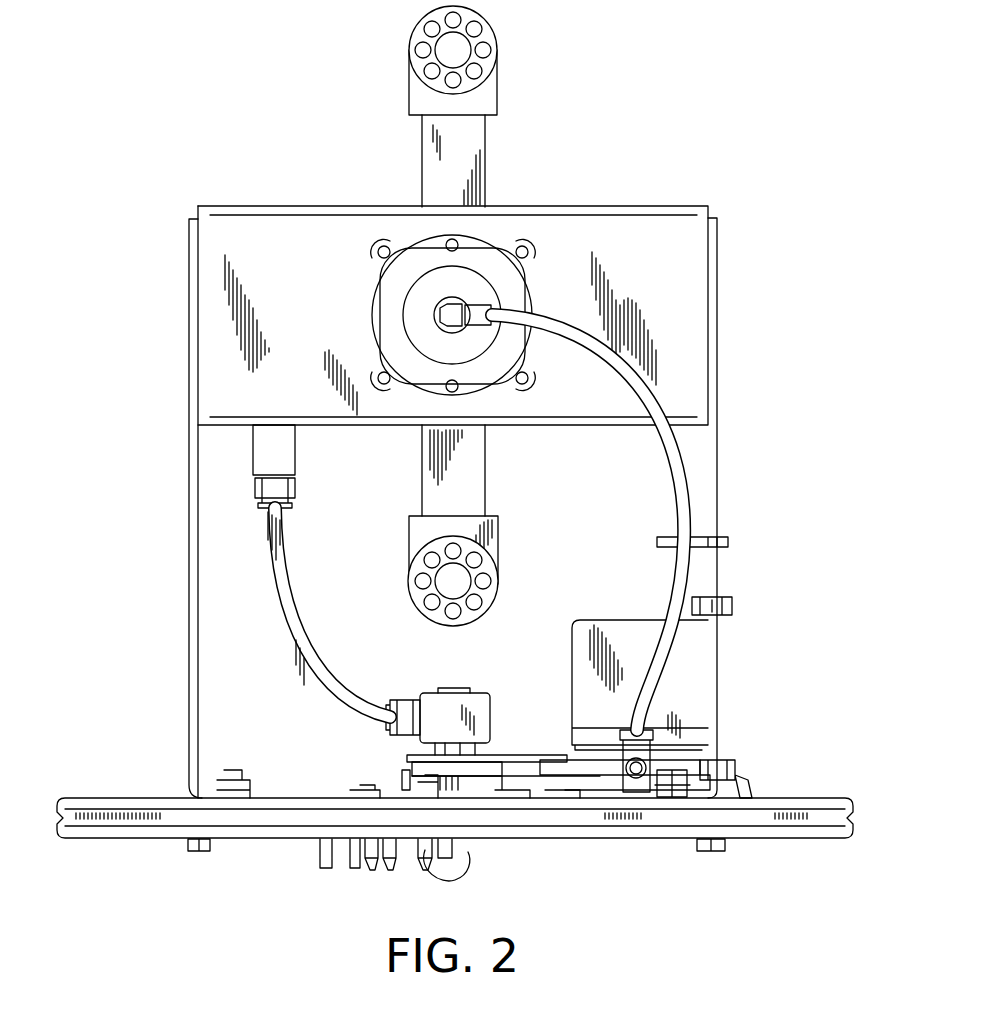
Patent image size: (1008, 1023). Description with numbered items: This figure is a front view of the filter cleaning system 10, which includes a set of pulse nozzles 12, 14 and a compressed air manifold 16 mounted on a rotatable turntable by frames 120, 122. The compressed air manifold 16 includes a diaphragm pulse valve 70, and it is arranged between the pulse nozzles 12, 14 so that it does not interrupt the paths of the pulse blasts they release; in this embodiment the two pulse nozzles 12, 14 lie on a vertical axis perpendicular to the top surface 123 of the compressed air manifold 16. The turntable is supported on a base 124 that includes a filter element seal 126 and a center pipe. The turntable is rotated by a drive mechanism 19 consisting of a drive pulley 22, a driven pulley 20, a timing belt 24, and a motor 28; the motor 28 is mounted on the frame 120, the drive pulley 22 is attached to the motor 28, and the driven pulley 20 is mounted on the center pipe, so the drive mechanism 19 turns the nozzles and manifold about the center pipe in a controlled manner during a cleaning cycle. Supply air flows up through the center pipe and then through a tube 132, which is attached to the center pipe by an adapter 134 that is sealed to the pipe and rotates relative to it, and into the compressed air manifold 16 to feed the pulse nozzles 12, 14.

The filter cleaning system 10 is at (684, 90).
The pulse nozzle 12 is at (498, 46).
The pulse nozzle 14 is at (500, 590).
The compressed air manifold 16 is at (700, 276).
The drive mechanism 19 is at (588, 792).
The driven pulley 20 is at (405, 758).
The drive pulley 22 is at (662, 792).
The timing belt 24 is at (527, 770).
The motor 28 is at (692, 674).
The diaphragm pulse valve 70 is at (522, 296).
The frame 120 is at (718, 455).
The frame 122 is at (188, 465).
The top surface 123 is at (666, 208).
The base 124 is at (848, 824).
The filter element seal 126 is at (826, 806).
The tube 132 is at (292, 613).
The adapter 134 is at (483, 712).